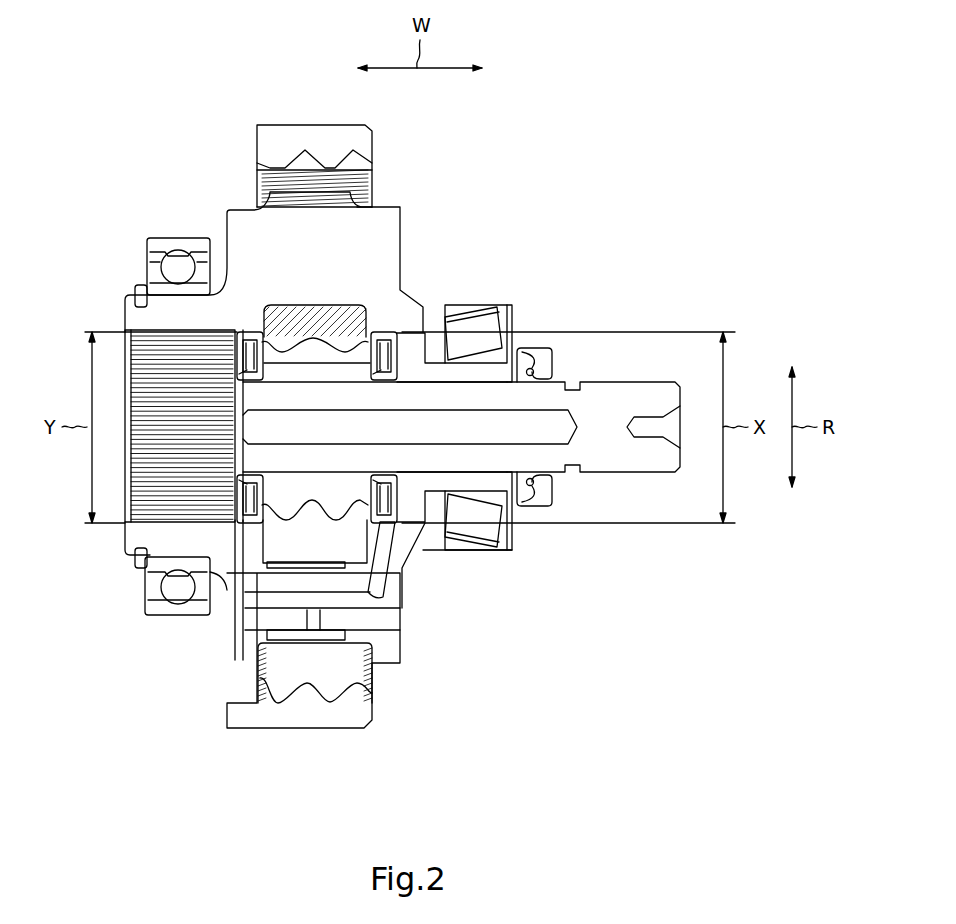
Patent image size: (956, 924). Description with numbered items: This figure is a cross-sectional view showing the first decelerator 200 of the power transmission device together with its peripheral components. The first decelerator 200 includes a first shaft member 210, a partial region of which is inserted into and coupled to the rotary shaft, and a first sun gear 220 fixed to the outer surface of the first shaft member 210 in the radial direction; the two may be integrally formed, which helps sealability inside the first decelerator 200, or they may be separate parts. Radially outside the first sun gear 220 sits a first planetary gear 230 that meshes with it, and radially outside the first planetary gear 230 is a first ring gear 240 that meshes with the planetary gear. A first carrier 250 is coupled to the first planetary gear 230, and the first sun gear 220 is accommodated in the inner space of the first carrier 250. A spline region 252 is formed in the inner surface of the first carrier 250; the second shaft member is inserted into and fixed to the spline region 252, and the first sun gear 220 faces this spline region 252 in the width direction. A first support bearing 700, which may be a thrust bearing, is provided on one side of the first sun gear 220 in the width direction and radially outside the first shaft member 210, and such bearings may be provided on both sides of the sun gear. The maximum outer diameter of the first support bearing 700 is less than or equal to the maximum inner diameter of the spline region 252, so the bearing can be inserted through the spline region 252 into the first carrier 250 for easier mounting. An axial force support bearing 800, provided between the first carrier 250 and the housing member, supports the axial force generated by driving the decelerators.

The first decelerator 200 is at (600, 294).
The first shaft member 210 is at (472, 452).
The first sun gear 220 is at (333, 483).
The first planetary gear 230 is at (330, 668).
The first ring gear 240 is at (302, 713).
The first carrier 250 is at (290, 266).
The spline region 252 is at (157, 460).
The first support bearing 700 is at (245, 351).
The axial force support bearing 800 is at (495, 312).